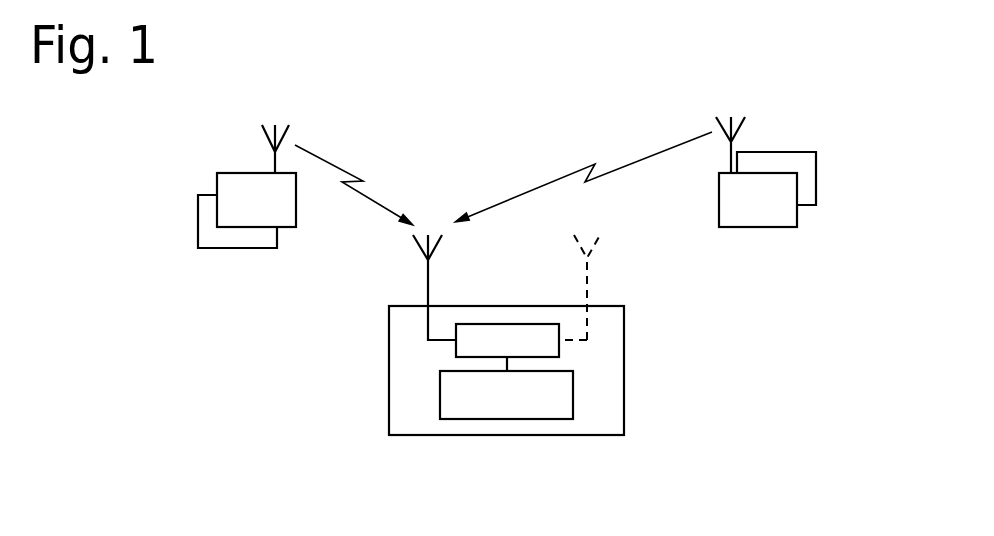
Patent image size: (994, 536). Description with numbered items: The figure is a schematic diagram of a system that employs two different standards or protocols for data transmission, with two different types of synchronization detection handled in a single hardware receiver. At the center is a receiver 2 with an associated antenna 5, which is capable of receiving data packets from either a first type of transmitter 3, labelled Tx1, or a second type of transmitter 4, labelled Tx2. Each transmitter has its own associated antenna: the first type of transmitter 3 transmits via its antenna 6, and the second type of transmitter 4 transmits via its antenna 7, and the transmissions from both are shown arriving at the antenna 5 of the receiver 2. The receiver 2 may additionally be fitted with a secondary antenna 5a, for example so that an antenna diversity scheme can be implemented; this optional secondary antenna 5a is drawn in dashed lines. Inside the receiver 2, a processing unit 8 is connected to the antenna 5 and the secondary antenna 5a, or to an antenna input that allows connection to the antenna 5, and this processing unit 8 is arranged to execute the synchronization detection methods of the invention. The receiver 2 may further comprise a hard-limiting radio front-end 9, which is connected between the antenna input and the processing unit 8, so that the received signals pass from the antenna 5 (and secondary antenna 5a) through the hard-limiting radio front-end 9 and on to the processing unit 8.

The receiver 2 is at (396, 408).
The first type of transmitter 3 is at (227, 240).
The second type of transmitter 4 is at (768, 215).
The antenna 5 is at (425, 277).
The secondary antenna 5a is at (587, 273).
The antenna 6 is at (276, 162).
The antenna 7 is at (735, 143).
The processing unit 8 is at (554, 383).
The hard-limiting radio front-end 9 is at (523, 333).